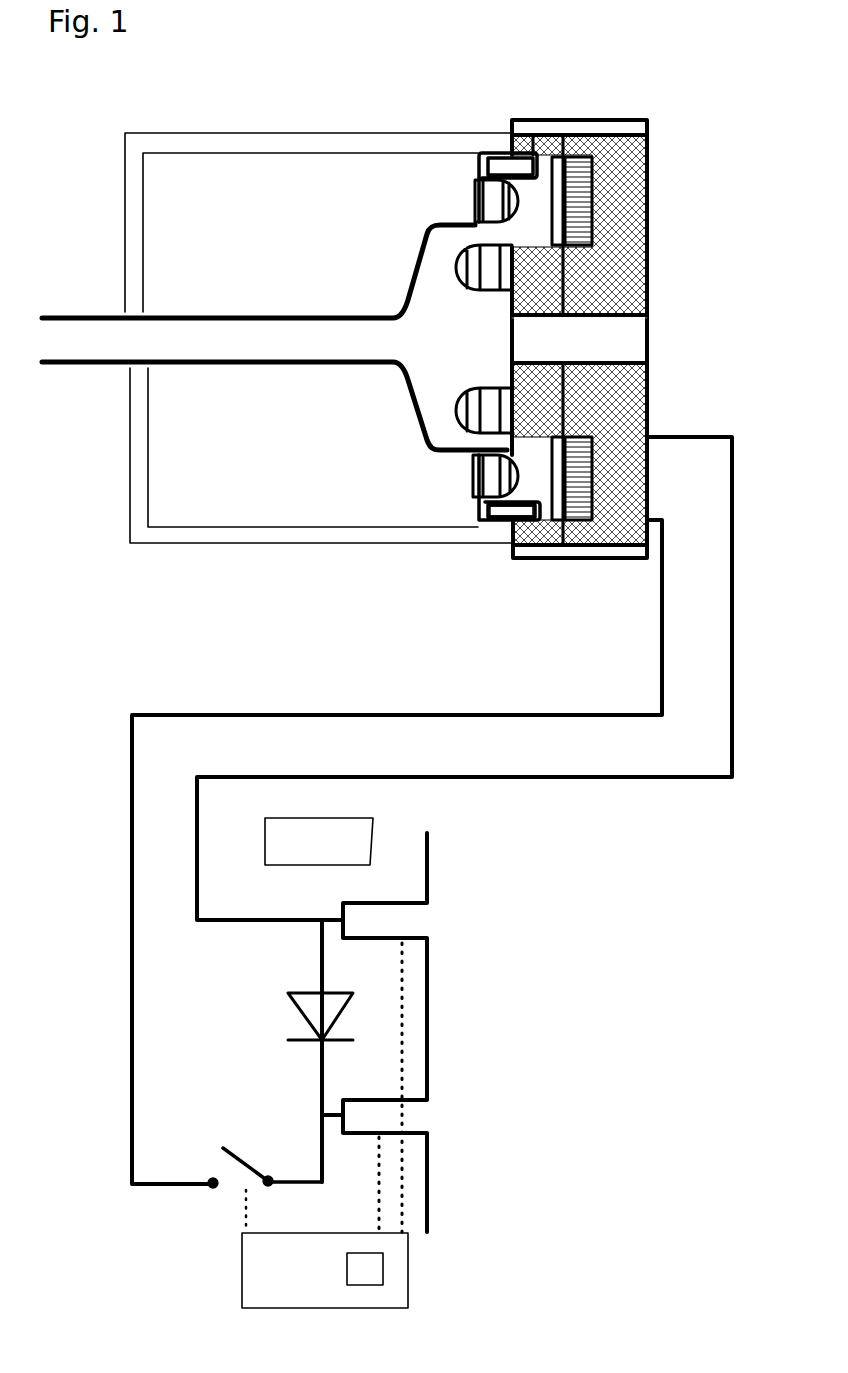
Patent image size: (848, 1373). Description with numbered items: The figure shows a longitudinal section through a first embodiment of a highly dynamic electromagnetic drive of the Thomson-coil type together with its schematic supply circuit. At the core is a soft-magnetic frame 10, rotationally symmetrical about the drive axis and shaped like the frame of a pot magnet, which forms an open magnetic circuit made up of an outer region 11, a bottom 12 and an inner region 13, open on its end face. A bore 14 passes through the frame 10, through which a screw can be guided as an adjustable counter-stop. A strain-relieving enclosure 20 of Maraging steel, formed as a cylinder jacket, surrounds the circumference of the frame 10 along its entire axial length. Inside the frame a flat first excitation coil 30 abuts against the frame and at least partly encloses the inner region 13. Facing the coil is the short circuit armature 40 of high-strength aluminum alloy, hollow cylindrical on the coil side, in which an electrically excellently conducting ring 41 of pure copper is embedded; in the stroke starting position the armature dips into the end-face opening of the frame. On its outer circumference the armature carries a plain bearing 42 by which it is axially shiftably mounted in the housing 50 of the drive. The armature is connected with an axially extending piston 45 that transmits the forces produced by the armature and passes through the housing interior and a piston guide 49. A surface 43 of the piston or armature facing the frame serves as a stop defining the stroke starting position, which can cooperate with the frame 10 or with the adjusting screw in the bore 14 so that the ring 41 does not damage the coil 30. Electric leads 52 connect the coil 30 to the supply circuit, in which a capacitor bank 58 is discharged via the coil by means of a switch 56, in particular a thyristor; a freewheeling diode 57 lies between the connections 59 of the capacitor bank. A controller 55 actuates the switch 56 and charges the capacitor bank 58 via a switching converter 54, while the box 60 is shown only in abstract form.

The soft-magnetic frame 10 is at (432, 698).
The outer region 11 is at (533, 150).
The bottom 12 is at (628, 200).
The inner region 13 is at (515, 275).
The bore 14 is at (579, 337).
The enclosure 20 is at (573, 125).
The first excitation coil 30 is at (593, 170).
The short circuit armature 40 is at (538, 203).
The ring 41 is at (513, 527).
The plain bearing 42 is at (503, 512).
The stop 43 is at (510, 382).
The piston 45 is at (256, 350).
The piston guide 49 is at (128, 310).
The housing 50 is at (289, 134).
The electric leads 52 is at (657, 437).
The switching converter 54 is at (365, 1275).
The controller 55 is at (268, 1300).
The switch 56 is at (258, 1160).
The freewheeling diode 57 is at (300, 1017).
The capacitor bank 58 is at (431, 1087).
The connections 59 is at (375, 943).
The voltage source 60 is at (319, 841).